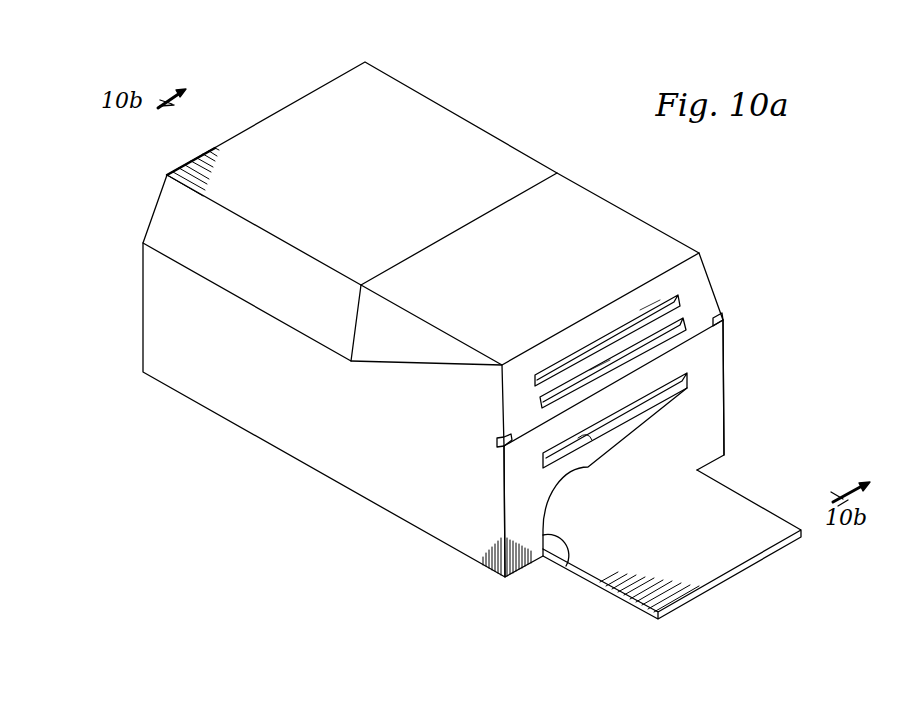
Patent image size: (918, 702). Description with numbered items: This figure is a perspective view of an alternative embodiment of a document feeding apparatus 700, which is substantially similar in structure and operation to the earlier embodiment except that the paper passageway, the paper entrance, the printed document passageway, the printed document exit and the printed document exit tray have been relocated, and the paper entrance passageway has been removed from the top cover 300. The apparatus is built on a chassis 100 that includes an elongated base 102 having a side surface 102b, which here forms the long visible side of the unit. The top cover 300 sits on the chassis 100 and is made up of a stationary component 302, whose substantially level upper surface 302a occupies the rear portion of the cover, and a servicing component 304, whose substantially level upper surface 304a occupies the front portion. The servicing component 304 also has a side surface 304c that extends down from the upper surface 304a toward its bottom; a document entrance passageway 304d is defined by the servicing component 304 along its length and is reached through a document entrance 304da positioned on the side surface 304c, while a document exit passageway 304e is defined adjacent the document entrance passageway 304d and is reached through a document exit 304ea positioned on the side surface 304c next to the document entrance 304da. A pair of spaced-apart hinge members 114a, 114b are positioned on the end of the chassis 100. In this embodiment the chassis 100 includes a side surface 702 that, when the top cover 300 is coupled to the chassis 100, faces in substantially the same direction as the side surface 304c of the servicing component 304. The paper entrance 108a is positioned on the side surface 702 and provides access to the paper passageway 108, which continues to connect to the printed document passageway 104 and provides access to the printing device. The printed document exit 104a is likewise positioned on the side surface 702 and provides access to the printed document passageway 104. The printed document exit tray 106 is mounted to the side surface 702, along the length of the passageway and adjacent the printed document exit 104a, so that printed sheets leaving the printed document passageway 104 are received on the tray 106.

The document feeding apparatus 700 is at (533, 85).
The top cover 300 is at (128, 190).
The stationary component 302 is at (455, 108).
The upper surface 302a is at (278, 122).
The servicing component 304 is at (648, 222).
The upper surface 304a is at (588, 197).
The side surface 304c is at (700, 275).
The document entrance passageway 304d is at (680, 298).
The document entrance 304da is at (634, 318).
The document exit passageway 304e is at (668, 337).
The document exit 304ea is at (582, 372).
The hinge member 114a is at (500, 450).
The hinge member 114b is at (725, 320).
The chassis 100 is at (103, 398).
The elongated base 102 is at (240, 408).
The side surface 102b is at (148, 333).
The side surface 702 is at (715, 440).
The paper passageway 108 is at (637, 417).
The paper entrance 108a is at (588, 433).
The printed document passageway 104 is at (577, 500).
The printed document exit 104a is at (568, 572).
The printed document exit tray 106 is at (707, 573).